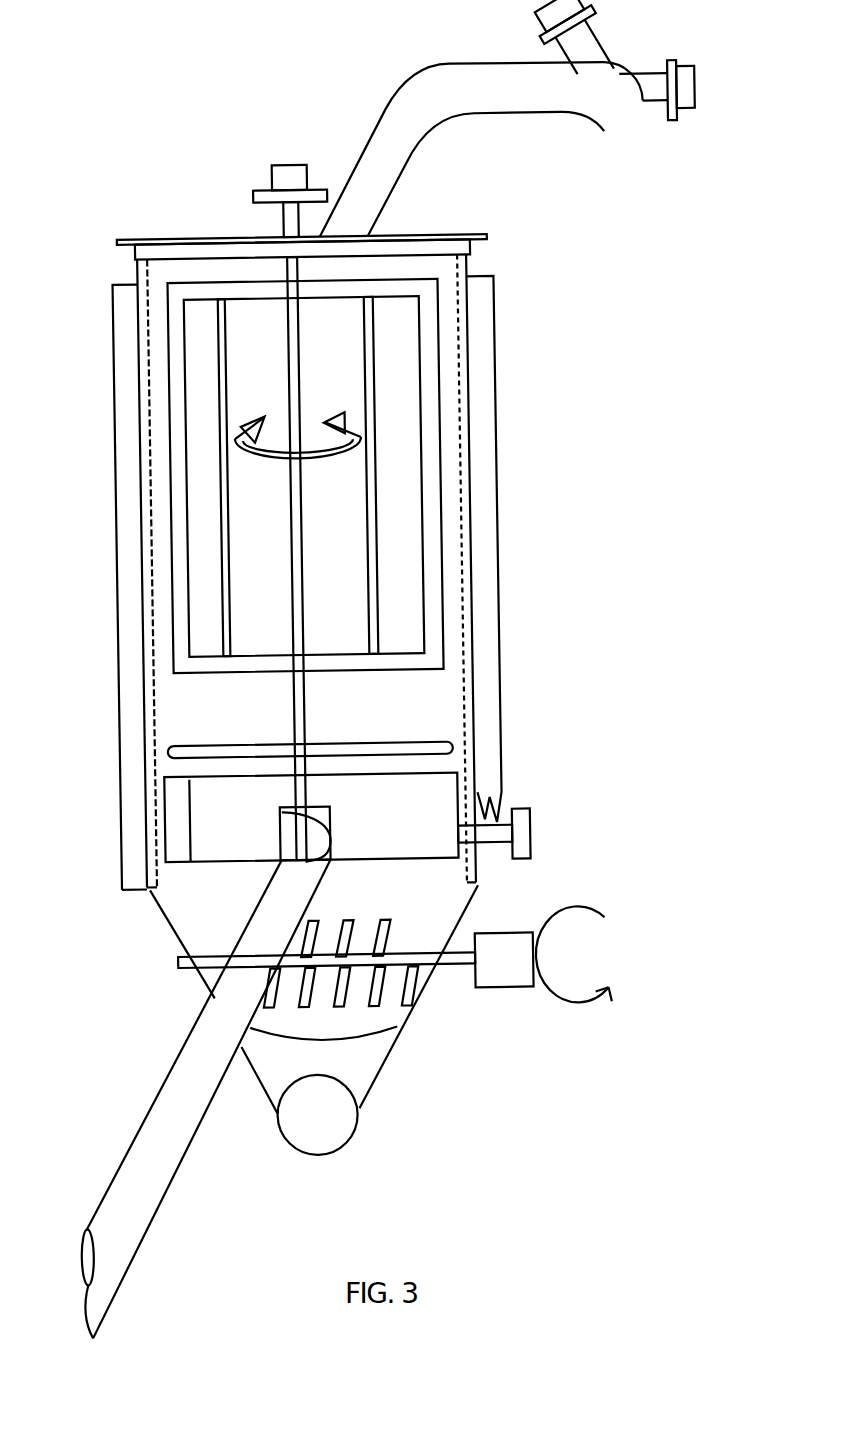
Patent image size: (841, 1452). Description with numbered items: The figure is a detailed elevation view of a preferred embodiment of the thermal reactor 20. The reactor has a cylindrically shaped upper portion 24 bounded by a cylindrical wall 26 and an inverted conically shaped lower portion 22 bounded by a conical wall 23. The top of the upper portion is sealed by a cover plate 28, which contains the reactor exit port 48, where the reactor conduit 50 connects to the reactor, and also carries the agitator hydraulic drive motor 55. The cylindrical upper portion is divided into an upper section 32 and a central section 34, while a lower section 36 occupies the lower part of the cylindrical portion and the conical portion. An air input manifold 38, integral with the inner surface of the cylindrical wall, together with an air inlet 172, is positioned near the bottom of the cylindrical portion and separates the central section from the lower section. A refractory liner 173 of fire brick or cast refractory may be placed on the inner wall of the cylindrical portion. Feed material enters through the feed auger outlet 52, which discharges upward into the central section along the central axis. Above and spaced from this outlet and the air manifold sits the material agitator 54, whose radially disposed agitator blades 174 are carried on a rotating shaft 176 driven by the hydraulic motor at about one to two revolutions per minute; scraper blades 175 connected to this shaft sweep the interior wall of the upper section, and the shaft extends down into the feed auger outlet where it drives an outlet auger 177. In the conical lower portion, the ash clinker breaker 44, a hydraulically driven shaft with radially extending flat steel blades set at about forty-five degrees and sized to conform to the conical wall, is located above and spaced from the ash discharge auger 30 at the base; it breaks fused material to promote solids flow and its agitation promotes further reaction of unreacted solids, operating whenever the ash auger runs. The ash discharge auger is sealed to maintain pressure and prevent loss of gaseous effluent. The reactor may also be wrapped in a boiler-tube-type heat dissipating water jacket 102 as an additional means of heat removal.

The thermal reactor 20 is at (112, 807).
The lower portion 22 is at (354, 1057).
The conical wall 23 is at (455, 911).
The upper portion 24 is at (466, 691).
The cylindrical wall 26 is at (467, 458).
The cover plate 28 is at (410, 237).
The ash discharge auger 30 is at (326, 1128).
The upper section 32 is at (348, 553).
The central section 34 is at (382, 733).
The lower section 36 is at (366, 916).
The air input manifold 38 is at (168, 852).
The ash clinker breaker 44 is at (384, 961).
The reactor exit port 48 is at (346, 233).
The reactor conduit 50 is at (395, 116).
The feed auger outlet 52 is at (309, 805).
The material agitator 54 is at (299, 720).
The agitator hydraulic drive motor 55 is at (285, 172).
The heat dissipating water jacket 102 is at (116, 656).
The air inlet 172 is at (511, 836).
The refractory liner 173 is at (462, 586).
The agitator blades 174 is at (239, 746).
The scraper blades 175 is at (170, 405).
The rotating shaft 176 is at (292, 577).
The outlet auger 177 is at (274, 835).